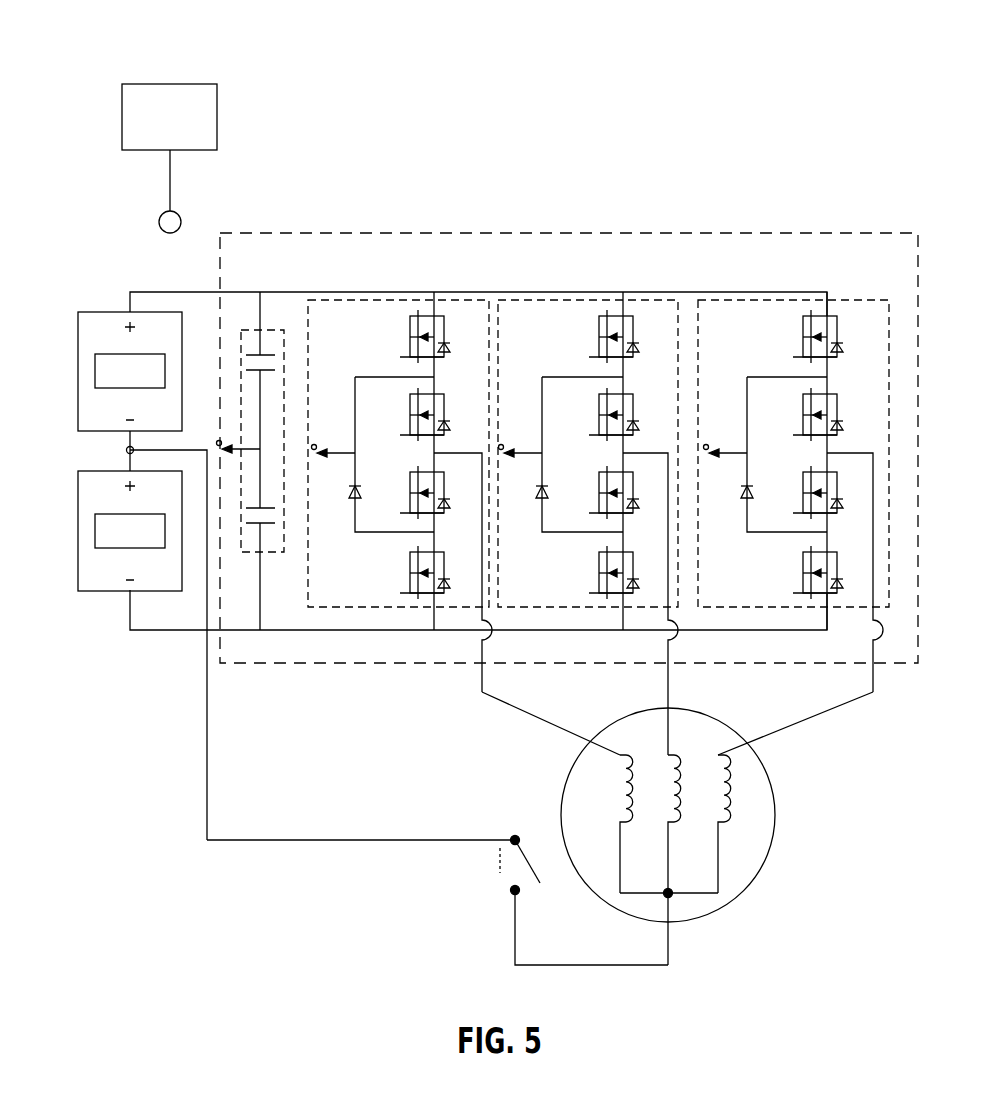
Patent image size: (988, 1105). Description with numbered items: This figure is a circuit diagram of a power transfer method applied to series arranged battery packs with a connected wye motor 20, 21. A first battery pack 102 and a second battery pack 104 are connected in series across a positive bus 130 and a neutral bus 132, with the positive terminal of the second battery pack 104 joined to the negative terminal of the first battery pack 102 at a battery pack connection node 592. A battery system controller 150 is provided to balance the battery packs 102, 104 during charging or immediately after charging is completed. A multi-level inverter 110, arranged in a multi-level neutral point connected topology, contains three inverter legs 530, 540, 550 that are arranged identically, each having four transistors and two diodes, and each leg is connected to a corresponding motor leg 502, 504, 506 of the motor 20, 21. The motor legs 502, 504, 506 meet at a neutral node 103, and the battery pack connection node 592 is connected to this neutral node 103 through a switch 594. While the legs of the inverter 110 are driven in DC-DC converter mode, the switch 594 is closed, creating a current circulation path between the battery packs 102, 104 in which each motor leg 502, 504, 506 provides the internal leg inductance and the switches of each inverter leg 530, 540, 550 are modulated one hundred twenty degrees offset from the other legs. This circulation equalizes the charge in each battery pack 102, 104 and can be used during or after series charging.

The battery system controller 150 is at (165, 83).
The first battery pack 102 is at (78, 373).
The second battery pack 104 is at (78, 543).
The battery pack connection node 592 is at (130, 450).
The multi-level inverter 110 is at (472, 233).
The positive bus 130 is at (283, 291).
The neutral bus 132 is at (348, 632).
The first inverter leg 530 is at (343, 300).
The second inverter leg 540 is at (535, 300).
The third inverter leg 550 is at (737, 300).
The motor 20 is at (724, 815).
The motor 21 is at (777, 813).
The motor leg 502 is at (620, 797).
The motor leg 504 is at (673, 755).
The motor leg 506 is at (730, 792).
The neutral node 103 is at (672, 895).
The switch 594 is at (512, 878).